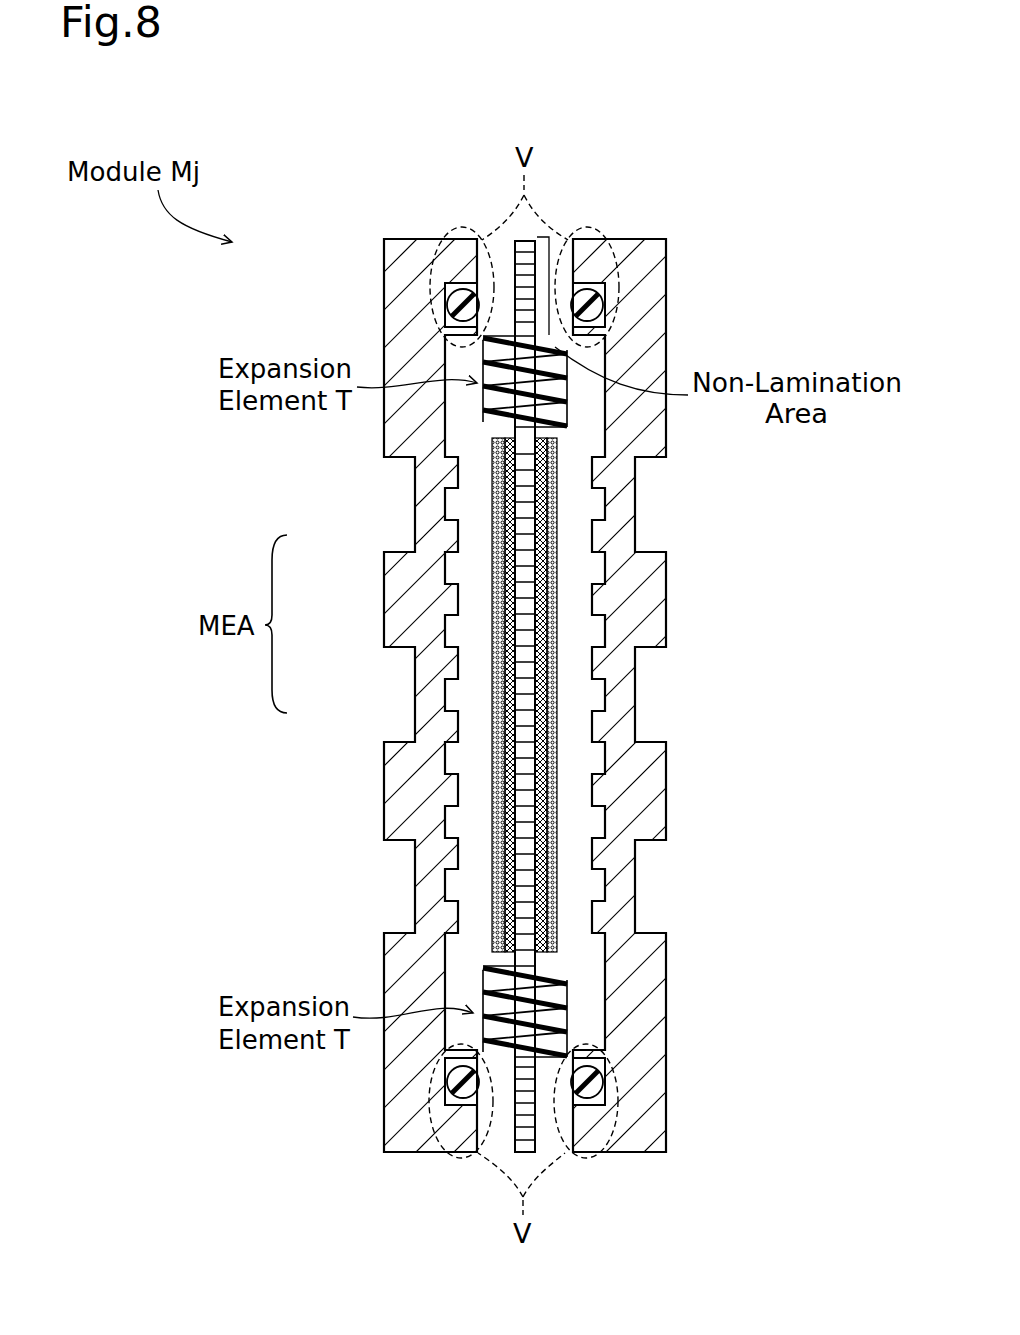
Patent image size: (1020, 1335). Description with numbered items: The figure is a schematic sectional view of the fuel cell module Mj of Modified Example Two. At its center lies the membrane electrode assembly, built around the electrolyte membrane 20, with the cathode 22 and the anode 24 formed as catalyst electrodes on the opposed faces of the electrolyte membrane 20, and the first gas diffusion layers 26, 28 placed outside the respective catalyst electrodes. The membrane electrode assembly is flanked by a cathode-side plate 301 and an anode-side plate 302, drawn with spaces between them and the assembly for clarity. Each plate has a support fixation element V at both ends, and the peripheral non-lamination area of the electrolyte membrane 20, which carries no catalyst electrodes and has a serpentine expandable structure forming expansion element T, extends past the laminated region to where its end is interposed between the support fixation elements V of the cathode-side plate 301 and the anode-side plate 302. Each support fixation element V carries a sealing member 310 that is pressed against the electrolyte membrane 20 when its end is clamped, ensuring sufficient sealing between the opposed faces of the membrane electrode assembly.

The electrolyte membrane 20 is at (524, 654).
The cathode 22 is at (540, 700).
The anode 24 is at (508, 632).
The first gas diffusion layer 26 is at (550, 728).
The first gas diffusion layer 28 is at (496, 598).
The cathode-side plate 301 is at (652, 972).
The anode-side plate 302 is at (395, 958).
The sealing member 310 is at (447, 292).